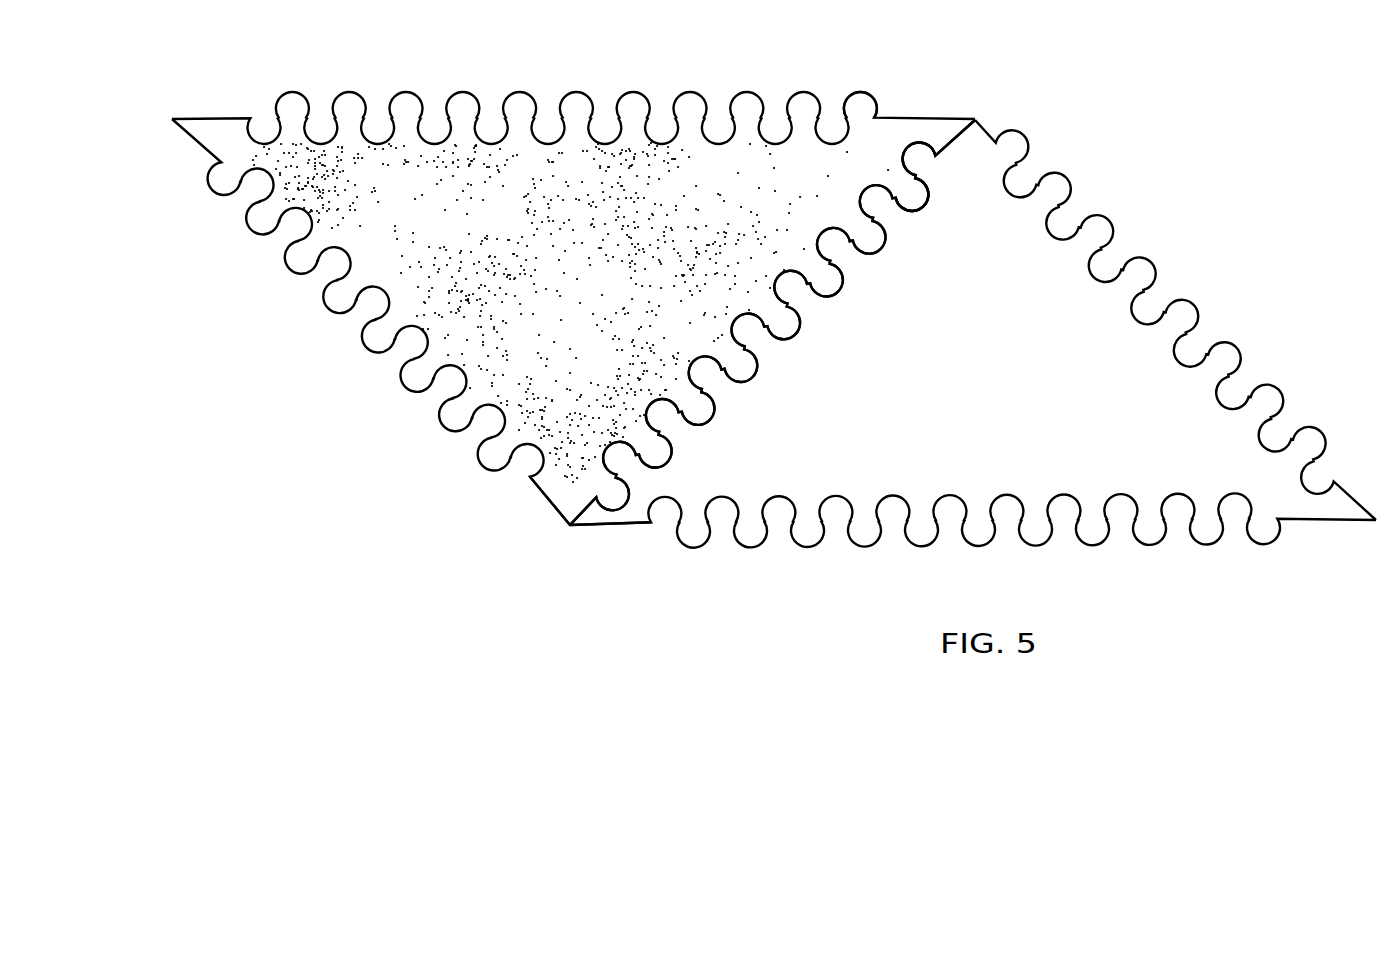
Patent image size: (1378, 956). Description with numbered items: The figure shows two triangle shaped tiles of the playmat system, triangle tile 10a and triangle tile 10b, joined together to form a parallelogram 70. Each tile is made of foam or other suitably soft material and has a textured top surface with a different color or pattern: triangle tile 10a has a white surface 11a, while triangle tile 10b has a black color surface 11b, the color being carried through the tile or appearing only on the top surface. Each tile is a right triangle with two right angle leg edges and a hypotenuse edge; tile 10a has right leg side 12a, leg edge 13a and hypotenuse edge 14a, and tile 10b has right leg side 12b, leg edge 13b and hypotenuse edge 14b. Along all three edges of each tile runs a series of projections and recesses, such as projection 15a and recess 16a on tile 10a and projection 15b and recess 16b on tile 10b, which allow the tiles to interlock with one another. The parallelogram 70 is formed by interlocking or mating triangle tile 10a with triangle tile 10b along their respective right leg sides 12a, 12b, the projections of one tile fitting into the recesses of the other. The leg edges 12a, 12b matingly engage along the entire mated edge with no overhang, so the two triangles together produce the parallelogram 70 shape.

The triangle tile 10a is at (973, 336).
The triangle tile 10b is at (573, 298).
The white surface 11a is at (976, 425).
The black color surface 11b is at (562, 276).
The right leg side 12a is at (782, 374).
The right leg side 12b is at (696, 320).
The right angle triangle leg edge 13a is at (1110, 332).
The right angle triangle leg edge 13b is at (374, 215).
The hypotenuse edge 14a is at (878, 465).
The hypotenuse edge 14b is at (539, 169).
The projection 15a is at (912, 165).
The projection 15b is at (917, 199).
The recess 16a is at (917, 203).
The recess 16b is at (907, 157).
The parallelogram 70 is at (557, 538).